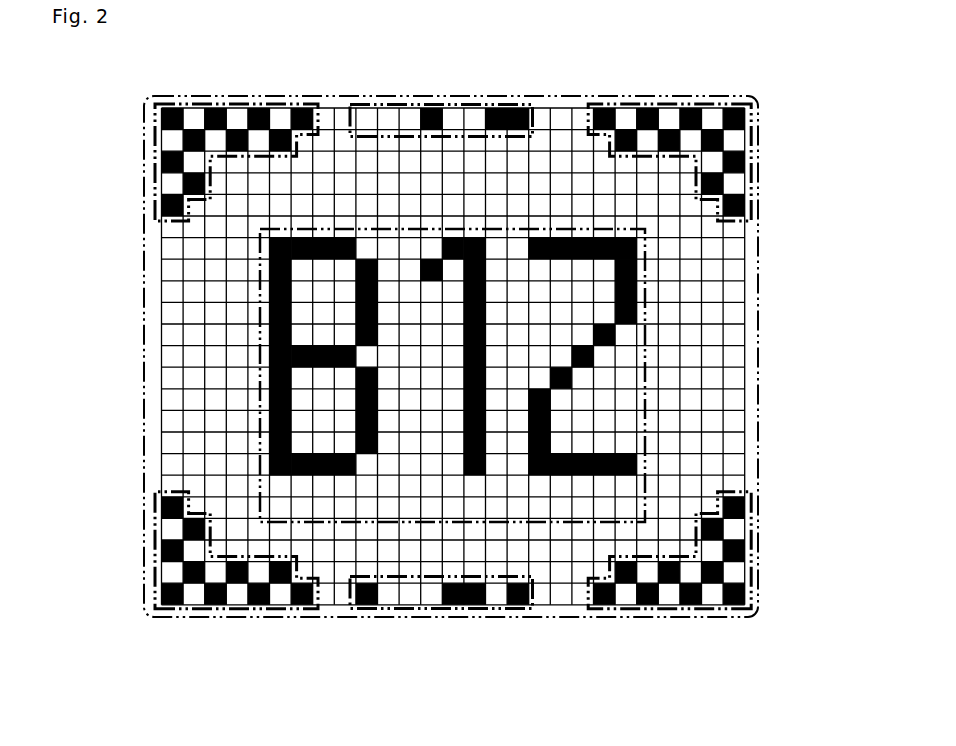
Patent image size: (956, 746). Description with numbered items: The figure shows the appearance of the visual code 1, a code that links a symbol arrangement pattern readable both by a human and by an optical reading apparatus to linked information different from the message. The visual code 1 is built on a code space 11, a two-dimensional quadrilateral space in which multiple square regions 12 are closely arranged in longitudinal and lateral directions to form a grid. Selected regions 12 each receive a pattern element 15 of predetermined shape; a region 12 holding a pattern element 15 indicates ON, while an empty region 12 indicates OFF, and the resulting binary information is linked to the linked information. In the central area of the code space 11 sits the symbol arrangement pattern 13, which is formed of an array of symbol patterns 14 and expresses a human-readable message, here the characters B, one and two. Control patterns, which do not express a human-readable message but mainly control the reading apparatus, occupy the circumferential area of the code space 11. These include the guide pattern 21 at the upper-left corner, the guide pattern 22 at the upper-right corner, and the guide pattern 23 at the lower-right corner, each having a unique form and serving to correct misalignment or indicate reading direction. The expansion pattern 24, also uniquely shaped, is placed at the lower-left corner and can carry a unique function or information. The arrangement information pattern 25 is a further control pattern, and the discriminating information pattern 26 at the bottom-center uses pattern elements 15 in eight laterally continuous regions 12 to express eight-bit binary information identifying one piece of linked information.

The visual code 1 is at (672, 58).
The code space 11 is at (145, 243).
The region 12 is at (343, 163).
The symbol arrangement pattern 13 is at (260, 357).
The symbol pattern 14 is at (322, 481).
The pattern element 15 is at (428, 262).
The guide pattern 21 is at (158, 102).
The guide pattern 22 is at (754, 102).
The guide pattern 23 is at (754, 611).
The expansion pattern 24 is at (152, 611).
The arrangement information pattern 25 is at (470, 103).
The discriminating information pattern 26 is at (445, 612).